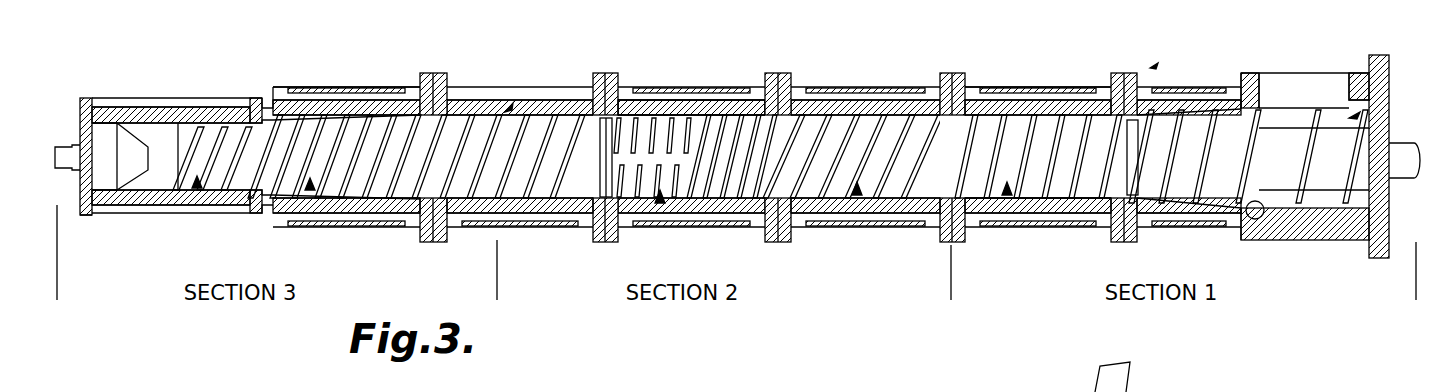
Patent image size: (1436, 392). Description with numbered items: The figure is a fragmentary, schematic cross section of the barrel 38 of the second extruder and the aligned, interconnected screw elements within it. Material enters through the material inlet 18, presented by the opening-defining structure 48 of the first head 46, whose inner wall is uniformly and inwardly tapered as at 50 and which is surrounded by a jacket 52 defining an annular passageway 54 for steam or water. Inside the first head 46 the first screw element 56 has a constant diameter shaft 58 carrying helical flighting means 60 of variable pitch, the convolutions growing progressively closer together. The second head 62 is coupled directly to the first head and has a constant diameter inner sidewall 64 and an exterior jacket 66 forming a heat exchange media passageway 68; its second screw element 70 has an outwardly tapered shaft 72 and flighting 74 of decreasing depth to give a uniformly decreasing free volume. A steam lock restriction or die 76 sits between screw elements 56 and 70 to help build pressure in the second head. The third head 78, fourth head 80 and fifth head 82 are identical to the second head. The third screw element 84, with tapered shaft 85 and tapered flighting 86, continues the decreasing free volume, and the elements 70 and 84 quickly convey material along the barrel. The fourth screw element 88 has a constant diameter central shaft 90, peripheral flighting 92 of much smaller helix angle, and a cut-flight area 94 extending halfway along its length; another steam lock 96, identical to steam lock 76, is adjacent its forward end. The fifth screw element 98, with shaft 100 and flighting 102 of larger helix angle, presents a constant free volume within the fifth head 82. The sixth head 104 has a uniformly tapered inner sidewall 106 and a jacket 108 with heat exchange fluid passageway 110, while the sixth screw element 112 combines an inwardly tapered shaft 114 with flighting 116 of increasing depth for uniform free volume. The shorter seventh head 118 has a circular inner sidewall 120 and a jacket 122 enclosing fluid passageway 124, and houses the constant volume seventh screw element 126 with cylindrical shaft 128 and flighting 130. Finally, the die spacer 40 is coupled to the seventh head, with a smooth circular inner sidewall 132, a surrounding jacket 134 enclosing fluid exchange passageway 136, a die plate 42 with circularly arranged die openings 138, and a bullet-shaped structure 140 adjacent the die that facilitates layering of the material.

The material inlet 18 is at (1303, 78).
The barrel 38 is at (1150, 68).
The die spacer 40 is at (95, 98).
The die plate 42 is at (88, 130).
The first head 46 is at (1306, 240).
The opening-defining structure 48 is at (1249, 82).
The tapered inner wall 50 is at (1254, 218).
The jacket 52 is at (1208, 92).
The annular passageway 54 is at (1206, 222).
The first screw element 56 is at (1355, 115).
The shaft 58 is at (1276, 133).
The helical flighting means 60 is at (1352, 205).
The second head 62 is at (1028, 105).
The inner sidewall 64 is at (1033, 200).
The exterior jacket 66 is at (1003, 95).
The heat exchange media passageway 68 is at (985, 98).
The second screw element 70 is at (1007, 190).
The shaft 72 is at (1096, 185).
The flighting 74 is at (1078, 130).
The steam lock restriction 76 is at (1136, 180).
The third head 78 is at (935, 100).
The fourth head 80 is at (762, 100).
The fifth head 82 is at (592, 98).
The third screw element 84 is at (857, 190).
The shaft 85 is at (917, 190).
The flighting 86 is at (868, 128).
The fourth screw element 88 is at (660, 202).
The central shaft 90 is at (747, 188).
The peripheral flighting 92 is at (700, 117).
The cut-flight area 94 is at (628, 133).
The steam lock 96 is at (606, 140).
The fifth screw element 98 is at (505, 118).
The shaft 100 is at (500, 192).
The flighting 102 is at (553, 213).
The sixth head 104 is at (412, 92).
The inner sidewall 106 is at (357, 115).
The jacket 108 is at (322, 88).
The heat exchange fluid passageway 110 is at (300, 87).
The sixth screw element 112 is at (293, 200).
The shaft 114 is at (333, 215).
The flighting 116 is at (383, 222).
The seventh head 118 is at (248, 108).
The inner sidewall 120 is at (220, 183).
The jacket 122 is at (197, 108).
The fluid passageway 124 is at (183, 100).
The seventh screw element 126 is at (197, 190).
The shaft 128 is at (205, 135).
The flighting 130 is at (230, 180).
The inner sidewall 132 is at (140, 188).
The jacket 134 is at (137, 213).
The fluid exchange passageway 136 is at (132, 100).
The die openings 138 is at (86, 197).
The bullet-shaped structure 140 is at (93, 217).